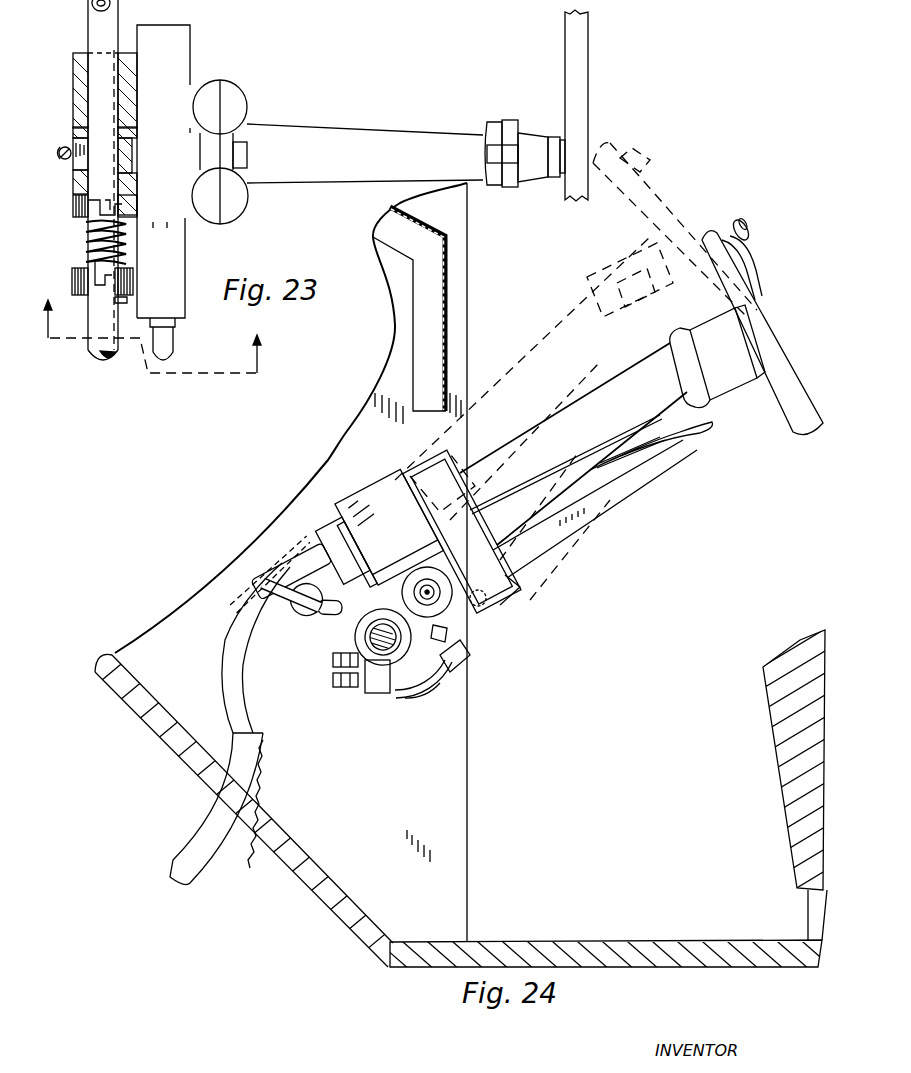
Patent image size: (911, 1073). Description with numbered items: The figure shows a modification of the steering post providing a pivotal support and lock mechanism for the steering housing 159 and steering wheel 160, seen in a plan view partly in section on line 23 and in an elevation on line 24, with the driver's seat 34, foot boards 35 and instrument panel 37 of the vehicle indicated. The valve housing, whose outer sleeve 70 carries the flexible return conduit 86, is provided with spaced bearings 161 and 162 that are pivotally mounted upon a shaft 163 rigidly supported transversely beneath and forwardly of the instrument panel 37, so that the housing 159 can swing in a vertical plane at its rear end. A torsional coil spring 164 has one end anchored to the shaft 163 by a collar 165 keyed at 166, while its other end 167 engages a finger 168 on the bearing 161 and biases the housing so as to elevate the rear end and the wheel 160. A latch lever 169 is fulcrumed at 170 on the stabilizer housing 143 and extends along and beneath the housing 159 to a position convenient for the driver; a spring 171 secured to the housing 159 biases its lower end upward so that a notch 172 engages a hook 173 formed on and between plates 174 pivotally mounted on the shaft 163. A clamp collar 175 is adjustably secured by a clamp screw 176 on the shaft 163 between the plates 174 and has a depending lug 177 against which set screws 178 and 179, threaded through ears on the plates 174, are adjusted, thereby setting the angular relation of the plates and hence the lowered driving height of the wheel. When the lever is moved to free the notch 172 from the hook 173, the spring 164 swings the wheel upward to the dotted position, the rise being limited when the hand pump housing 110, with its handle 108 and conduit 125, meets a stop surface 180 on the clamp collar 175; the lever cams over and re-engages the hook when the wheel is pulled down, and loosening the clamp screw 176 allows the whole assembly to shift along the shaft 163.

In FIG. 24, the section line 23— 23 is at (578, 388).
In FIG. 23, the section line 24— 24 is at (152, 347).
In FIG. 24, the driver's seat 34 is at (774, 778).
In FIG. 24, the foot boards 35 is at (380, 941).
In FIG. 24, the instrument panel 37 is at (447, 303).
In FIG. 23, the sleeve 70 is at (172, 263).
In FIG. 24, the sleeve 70 is at (424, 552).
In FIG. 24, the flexible conduit 86 is at (742, 218).
In FIG. 24, the handle 108 is at (748, 268).
In FIG. 24, the hand pump housing 110 is at (316, 565).
In FIG. 24, the conduit 125 is at (262, 675).
In FIG. 23, the stabilizer housing 143 is at (240, 110).
In FIG. 24, the stabilizer housing 143 is at (518, 593).
In FIG. 23, the steering housing 159 is at (378, 128).
In FIG. 24, the steering housing 159 is at (648, 386).
In FIG. 23, the steering wheel 160 is at (578, 103).
In FIG. 24, the steering wheel 160 is at (789, 380).
In FIG. 23, the bearing 161 is at (75, 198).
In FIG. 24, the bearing 161 is at (392, 586).
In FIG. 23, the bearing 162 is at (76, 85).
In FIG. 23, the shaft 163 is at (98, 17).
In FIG. 24, the shaft 163 is at (383, 650).
In FIG. 23, the torsional coil spring 164 is at (82, 251).
In FIG. 23, the collar 165 is at (72, 288).
In FIG. 23, the key 166 is at (124, 299).
In FIG. 23, the spring end 167 is at (128, 204).
In FIG. 23, the finger 168 is at (97, 212).
In FIG. 24, the latch lever 169 is at (548, 553).
In FIG. 24, the fulcrum 170 is at (488, 602).
In FIG. 24, the spring 171 is at (662, 445).
In FIG. 24, the notch 172 is at (452, 666).
In FIG. 24, the hook 173 is at (436, 697).
In FIG. 23, the plates 174 is at (133, 134).
In FIG. 24, the plates 174 is at (410, 695).
In FIG. 23, the clamp collar 175 is at (74, 142).
In FIG. 24, the clamp collar 175 is at (337, 647).
In FIG. 23, the clamp screw 176 is at (64, 147).
In FIG. 24, the clamp screw 176 is at (338, 668).
In FIG. 24, the depending lug 177 is at (390, 690).
In FIG. 24, the set screw 178 is at (345, 690).
In FIG. 24, the set screw 179 is at (460, 651).
In FIG. 24, the stop surface 180 is at (324, 597).